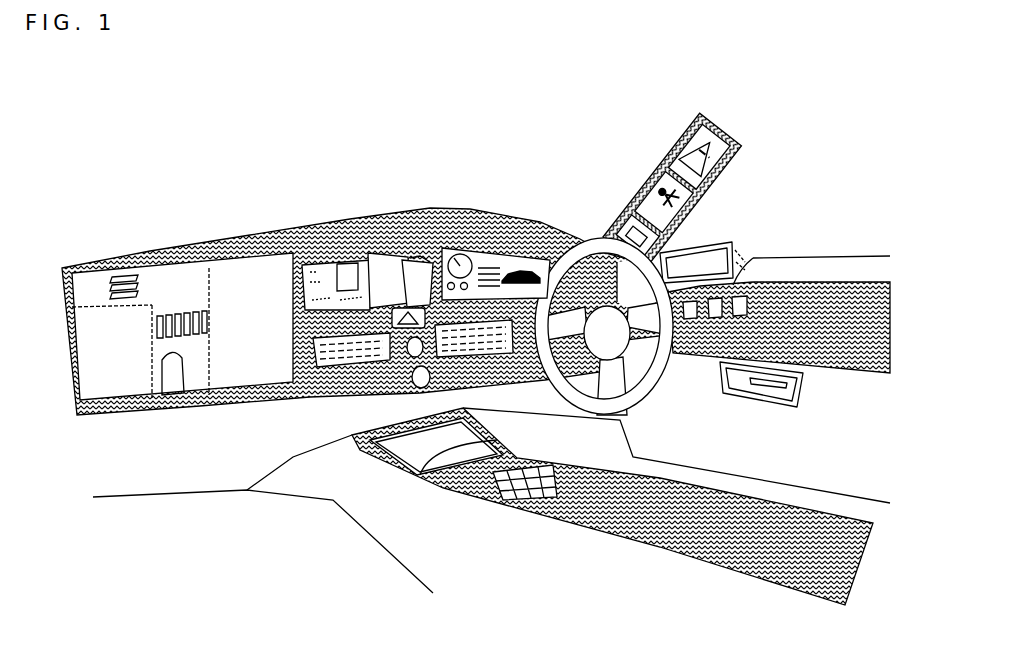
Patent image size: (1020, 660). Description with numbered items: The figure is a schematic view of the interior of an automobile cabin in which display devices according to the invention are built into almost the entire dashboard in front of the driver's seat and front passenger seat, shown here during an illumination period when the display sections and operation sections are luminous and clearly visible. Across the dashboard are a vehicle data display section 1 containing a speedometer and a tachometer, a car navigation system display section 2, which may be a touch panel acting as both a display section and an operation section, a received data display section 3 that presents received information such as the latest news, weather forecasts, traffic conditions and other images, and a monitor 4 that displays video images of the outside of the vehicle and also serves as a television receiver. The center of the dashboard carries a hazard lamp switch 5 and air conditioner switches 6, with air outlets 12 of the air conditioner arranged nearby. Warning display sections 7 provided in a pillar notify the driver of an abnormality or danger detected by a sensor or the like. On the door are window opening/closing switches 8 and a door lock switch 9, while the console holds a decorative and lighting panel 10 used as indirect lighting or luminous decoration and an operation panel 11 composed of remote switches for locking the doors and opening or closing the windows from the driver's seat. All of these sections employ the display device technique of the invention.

The vehicle data display section 1 is at (480, 262).
The car navigation system display section 2 is at (426, 268).
The received data display section 3 is at (312, 268).
The monitor 4 is at (210, 277).
The hazard lamp switch 5 is at (386, 268).
The air conditioner switches 6 is at (400, 378).
The warning display sections 7 is at (688, 207).
The window opening/closing switches 8 is at (720, 268).
The door lock switch 9 is at (740, 296).
The decorative and lighting panel 10 is at (397, 480).
The operation panel 11 is at (503, 500).
The air outlets 12 is at (357, 362).